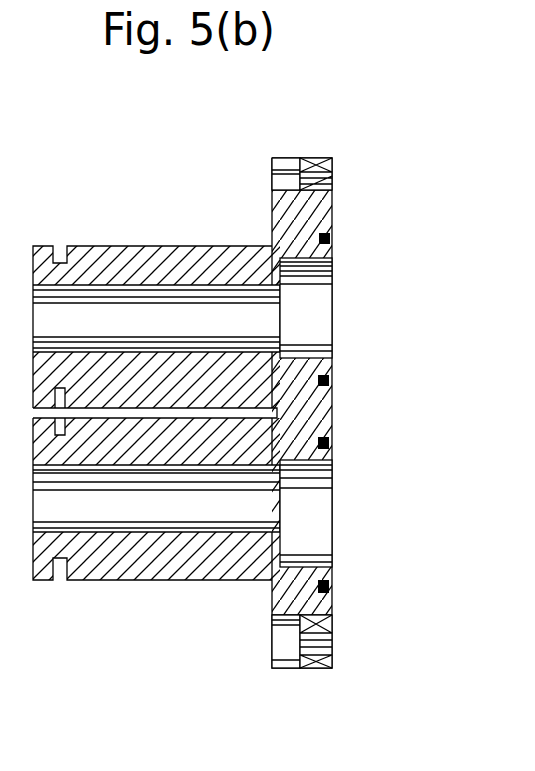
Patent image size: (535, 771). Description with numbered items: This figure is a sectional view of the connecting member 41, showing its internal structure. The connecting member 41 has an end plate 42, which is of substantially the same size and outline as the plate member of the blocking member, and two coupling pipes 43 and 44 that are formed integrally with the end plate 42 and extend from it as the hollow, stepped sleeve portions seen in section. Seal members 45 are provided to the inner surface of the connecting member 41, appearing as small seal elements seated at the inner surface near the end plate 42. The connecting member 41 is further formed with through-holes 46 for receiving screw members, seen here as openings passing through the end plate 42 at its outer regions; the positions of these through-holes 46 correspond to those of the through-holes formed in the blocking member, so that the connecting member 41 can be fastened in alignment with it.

The connecting member 41 is at (183, 588).
The end plate 42 is at (284, 230).
The coupling pipe 43 is at (119, 257).
The coupling pipe 44 is at (92, 570).
The seal member 45 is at (334, 379).
The through-hole 46 is at (306, 160).